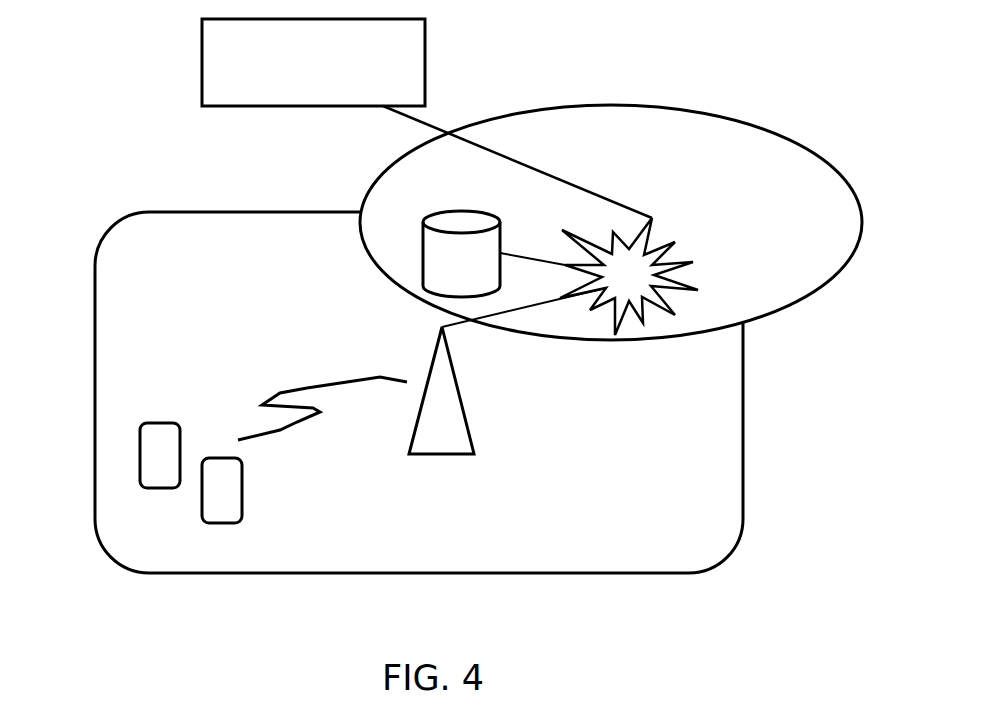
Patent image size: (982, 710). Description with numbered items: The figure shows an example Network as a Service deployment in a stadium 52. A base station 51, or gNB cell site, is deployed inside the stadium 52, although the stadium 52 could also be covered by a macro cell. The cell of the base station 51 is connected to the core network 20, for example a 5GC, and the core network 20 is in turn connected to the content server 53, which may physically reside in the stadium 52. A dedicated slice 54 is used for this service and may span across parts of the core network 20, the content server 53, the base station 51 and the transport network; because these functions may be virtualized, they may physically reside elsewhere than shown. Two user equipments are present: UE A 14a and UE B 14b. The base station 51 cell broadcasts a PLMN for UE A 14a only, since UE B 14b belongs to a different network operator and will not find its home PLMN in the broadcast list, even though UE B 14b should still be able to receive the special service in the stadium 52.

The core network 20 is at (268, 107).
The dedicated slice 54 is at (611, 104).
The stadium 52 is at (460, 573).
The content server 53 is at (420, 253).
The base station 51 is at (442, 457).
The UE A 14a is at (202, 503).
The UE B 14b is at (138, 463).